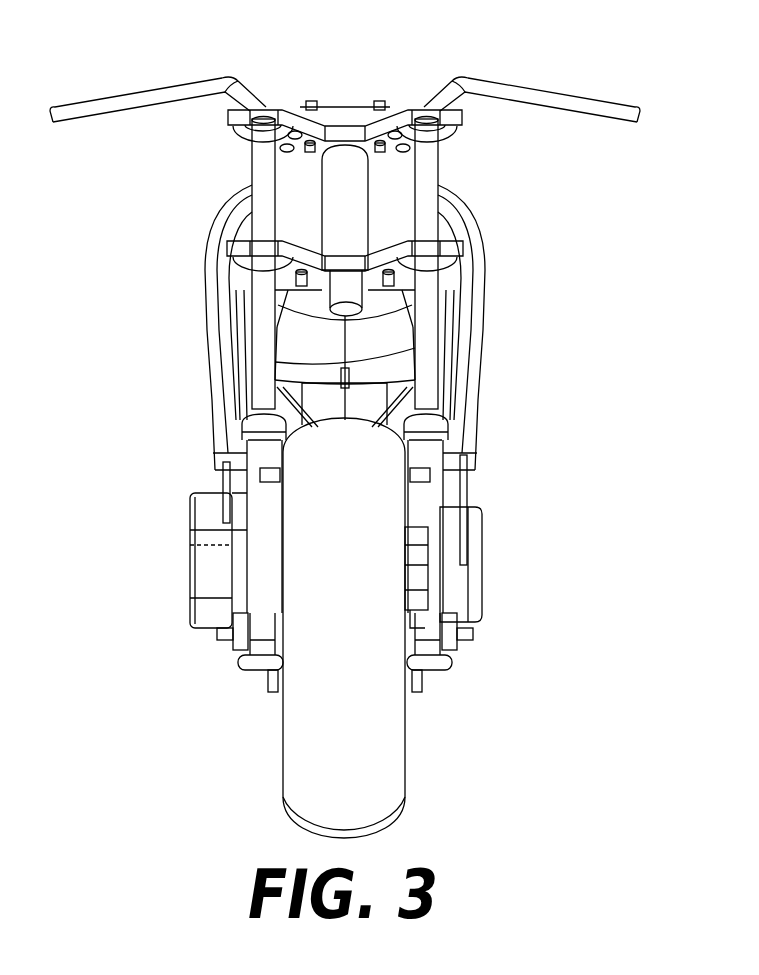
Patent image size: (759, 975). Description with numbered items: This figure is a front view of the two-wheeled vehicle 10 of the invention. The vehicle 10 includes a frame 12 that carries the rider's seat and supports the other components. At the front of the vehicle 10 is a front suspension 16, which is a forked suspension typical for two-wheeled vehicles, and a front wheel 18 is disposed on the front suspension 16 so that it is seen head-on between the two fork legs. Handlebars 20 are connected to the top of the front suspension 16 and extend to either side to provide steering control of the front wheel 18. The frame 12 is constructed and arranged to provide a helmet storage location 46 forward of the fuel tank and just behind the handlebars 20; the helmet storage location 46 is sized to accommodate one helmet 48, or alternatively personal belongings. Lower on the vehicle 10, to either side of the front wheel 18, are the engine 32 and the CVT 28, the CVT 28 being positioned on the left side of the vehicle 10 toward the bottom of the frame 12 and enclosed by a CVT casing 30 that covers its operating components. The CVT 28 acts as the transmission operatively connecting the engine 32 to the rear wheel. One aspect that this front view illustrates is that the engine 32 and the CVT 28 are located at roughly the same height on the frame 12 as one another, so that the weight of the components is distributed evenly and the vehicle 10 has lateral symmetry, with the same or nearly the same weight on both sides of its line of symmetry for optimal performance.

The two-wheeled vehicle 10 is at (641, 334).
The frame 12 is at (209, 222).
The front suspension 16 is at (438, 172).
The front wheel 18 is at (387, 743).
The handlebars 20 is at (559, 97).
The CVT 28 is at (493, 538).
The CVT casing 30 is at (477, 605).
The engine 32 is at (203, 613).
The helmet storage location 46 is at (292, 358).
The helmet 48 is at (390, 342).